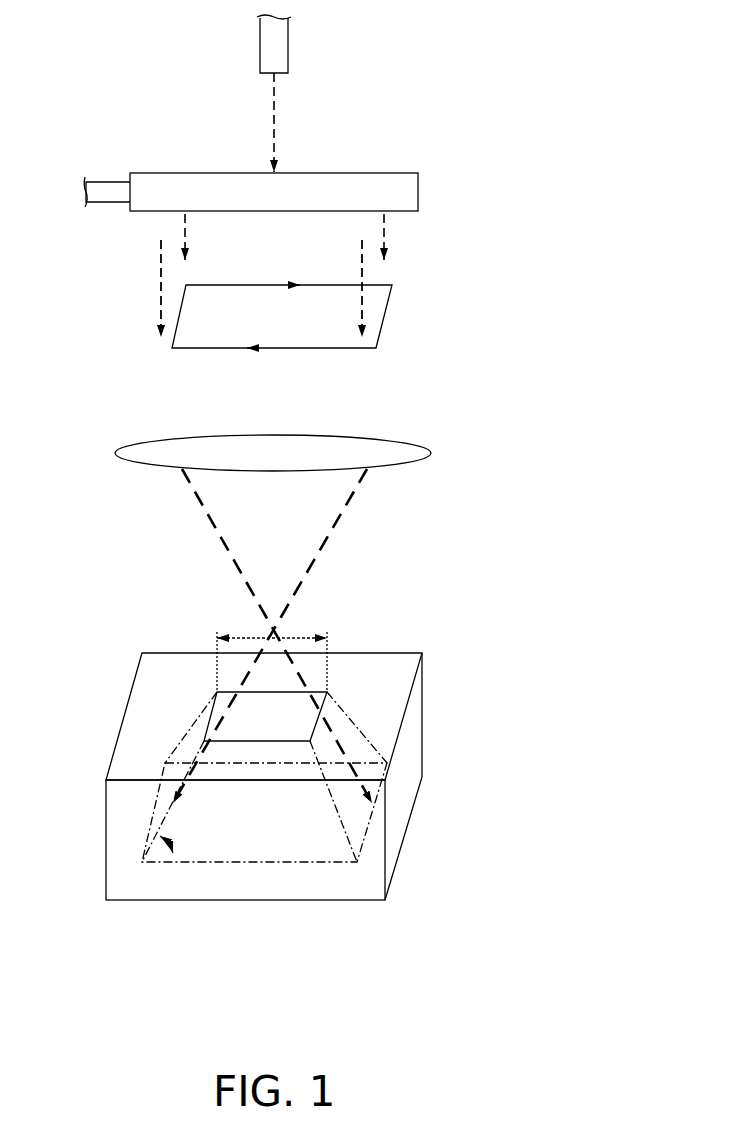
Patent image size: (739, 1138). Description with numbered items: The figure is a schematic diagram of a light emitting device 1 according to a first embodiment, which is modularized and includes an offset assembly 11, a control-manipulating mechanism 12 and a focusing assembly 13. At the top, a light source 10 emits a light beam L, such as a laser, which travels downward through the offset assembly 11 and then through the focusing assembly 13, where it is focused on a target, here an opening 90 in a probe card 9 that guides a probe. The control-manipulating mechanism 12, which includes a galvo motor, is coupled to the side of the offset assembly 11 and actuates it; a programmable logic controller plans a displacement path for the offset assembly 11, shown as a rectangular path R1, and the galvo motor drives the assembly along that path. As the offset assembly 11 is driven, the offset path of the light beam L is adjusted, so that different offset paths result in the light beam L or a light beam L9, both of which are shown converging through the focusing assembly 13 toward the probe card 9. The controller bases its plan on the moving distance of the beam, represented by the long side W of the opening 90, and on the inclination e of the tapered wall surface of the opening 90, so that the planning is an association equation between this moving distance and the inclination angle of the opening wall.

The light emitting device 1 is at (494, 100).
The light source 10 is at (280, 50).
The offset assembly 11 is at (413, 193).
The control-manipulating mechanism 12 is at (102, 184).
The focusing assembly 13 is at (430, 452).
The probe card 9 is at (397, 695).
The opening 90 is at (298, 727).
The light beam L is at (272, 115).
The light beam L9 is at (387, 228).
The rectangular path R1 is at (388, 305).
The long side W is at (272, 653).
The inclination e is at (174, 843).